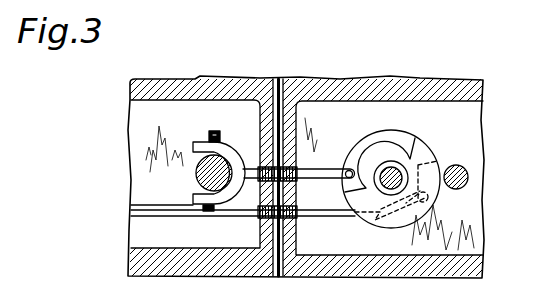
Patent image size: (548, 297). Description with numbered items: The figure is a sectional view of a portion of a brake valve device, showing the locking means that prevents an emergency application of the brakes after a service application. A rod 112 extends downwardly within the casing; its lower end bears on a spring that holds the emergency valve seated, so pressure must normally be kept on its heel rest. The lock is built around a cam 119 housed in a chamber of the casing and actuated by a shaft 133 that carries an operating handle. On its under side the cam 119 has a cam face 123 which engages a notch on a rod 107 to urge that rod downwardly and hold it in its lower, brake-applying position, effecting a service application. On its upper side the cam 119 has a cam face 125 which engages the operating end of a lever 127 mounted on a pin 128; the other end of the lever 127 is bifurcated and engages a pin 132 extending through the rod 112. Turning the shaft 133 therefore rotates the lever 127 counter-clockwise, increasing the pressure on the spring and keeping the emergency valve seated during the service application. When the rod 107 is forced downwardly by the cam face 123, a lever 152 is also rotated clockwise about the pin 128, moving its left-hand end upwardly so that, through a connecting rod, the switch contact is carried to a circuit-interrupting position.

The rod 107 is at (475, 152).
The rod 112 is at (199, 176).
The cam 119 is at (421, 138).
The cam face 123 is at (429, 203).
The cam face 125 is at (379, 136).
The lever 127 is at (306, 181).
The pin 128 is at (296, 125).
The pin 132 is at (227, 117).
The shaft 133 is at (383, 173).
The lever 152 is at (160, 212).